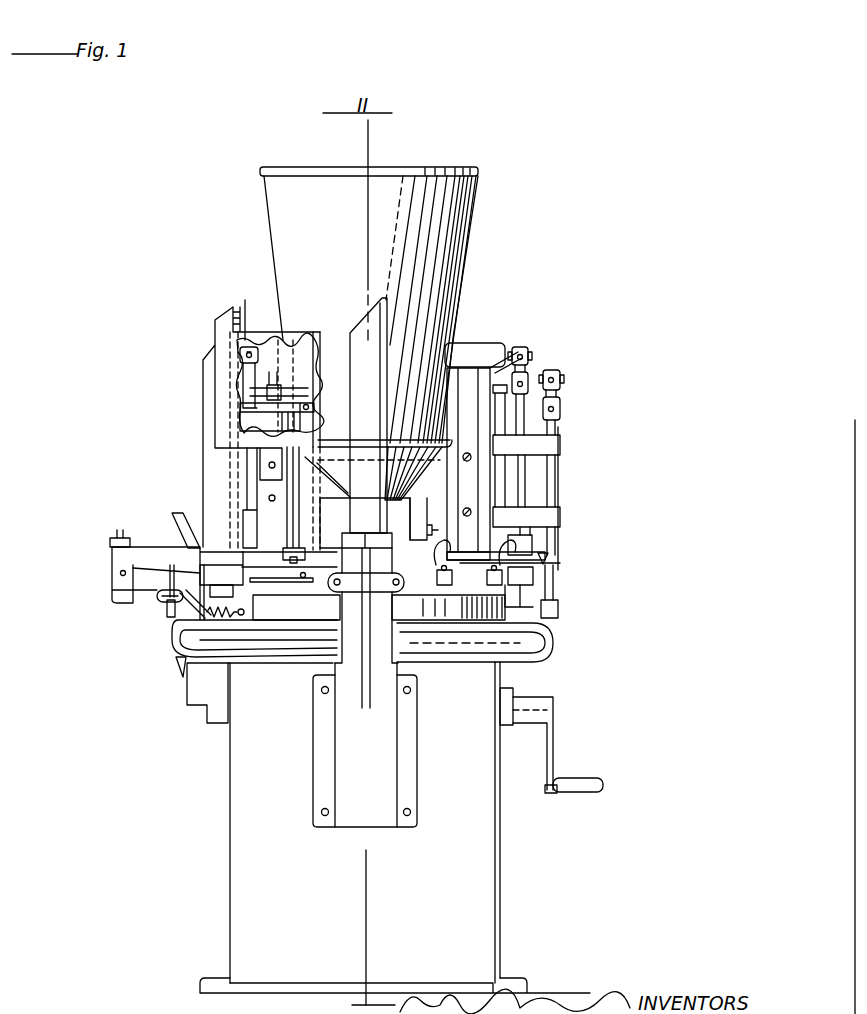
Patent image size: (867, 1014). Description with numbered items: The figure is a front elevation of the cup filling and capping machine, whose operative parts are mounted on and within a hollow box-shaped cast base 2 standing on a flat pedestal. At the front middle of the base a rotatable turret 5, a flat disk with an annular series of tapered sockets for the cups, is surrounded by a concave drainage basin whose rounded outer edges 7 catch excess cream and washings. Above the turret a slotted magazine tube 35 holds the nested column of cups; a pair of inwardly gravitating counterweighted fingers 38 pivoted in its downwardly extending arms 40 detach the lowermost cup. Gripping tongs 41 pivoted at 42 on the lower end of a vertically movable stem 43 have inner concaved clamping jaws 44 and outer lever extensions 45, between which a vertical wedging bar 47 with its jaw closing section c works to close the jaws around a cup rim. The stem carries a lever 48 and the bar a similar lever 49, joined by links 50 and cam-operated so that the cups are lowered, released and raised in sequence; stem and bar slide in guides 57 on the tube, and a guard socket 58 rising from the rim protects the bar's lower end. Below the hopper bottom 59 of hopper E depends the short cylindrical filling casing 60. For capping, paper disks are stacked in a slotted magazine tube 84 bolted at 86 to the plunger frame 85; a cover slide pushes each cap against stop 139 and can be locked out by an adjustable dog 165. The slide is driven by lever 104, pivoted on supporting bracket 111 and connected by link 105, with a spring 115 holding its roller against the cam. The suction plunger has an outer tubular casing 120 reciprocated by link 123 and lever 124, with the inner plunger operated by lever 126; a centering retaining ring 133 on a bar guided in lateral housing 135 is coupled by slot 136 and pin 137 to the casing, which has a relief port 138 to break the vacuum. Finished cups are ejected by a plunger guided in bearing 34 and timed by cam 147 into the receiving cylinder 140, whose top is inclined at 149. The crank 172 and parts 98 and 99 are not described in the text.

The hopper E is at (276, 196).
The base 2 is at (395, 827).
The turret 5 is at (448, 607).
The outer edges 7 is at (521, 625).
The bearing 34 is at (365, 776).
The magazine tube 35 is at (470, 387).
The counterweighted fingers 38 is at (488, 578).
The downwardly extending arms 40 is at (443, 553).
The gripping tongs 41 is at (551, 562).
The pivot 42 is at (533, 552).
The vertically movable stem 43 is at (521, 485).
The clamping jaws 44 is at (448, 537).
The lever extensions 45 is at (551, 557).
The wedging bar 47 is at (550, 472).
The lever 48 is at (500, 360).
The lever 49 is at (540, 368).
The links 50 is at (528, 377).
The guides 57 is at (532, 443).
The guard socket 58 is at (554, 605).
The hopper bottom 59 is at (332, 462).
The cylindrical casing 60 is at (334, 508).
The magazine tube 84 is at (207, 447).
The plunger frame 85 is at (252, 482).
The bolting point 86 is at (246, 522).
The arm 98 is at (148, 572).
The block 99 is at (122, 575).
The lever 104 is at (178, 621).
The link 105 is at (156, 598).
The supporting bracket 111 is at (215, 686).
The spring 115 is at (222, 618).
The tubular casing 120 is at (262, 420).
The link 123 is at (250, 377).
The lever 124 is at (247, 337).
The lever 126 is at (270, 388).
The centering retaining ring 133 is at (272, 571).
The lateral housing 135 is at (310, 497).
The slot 136 is at (315, 420).
The pin 137 is at (315, 393).
The relief port 138 is at (265, 498).
The stop 139 is at (296, 607).
The receiving cylinder 140 is at (369, 415).
The cam 147 is at (337, 584).
The inclined top 149 is at (362, 315).
The adjustable dog 165 is at (121, 536).
The crank 172 is at (548, 749).
The jaw closing section c is at (554, 582).